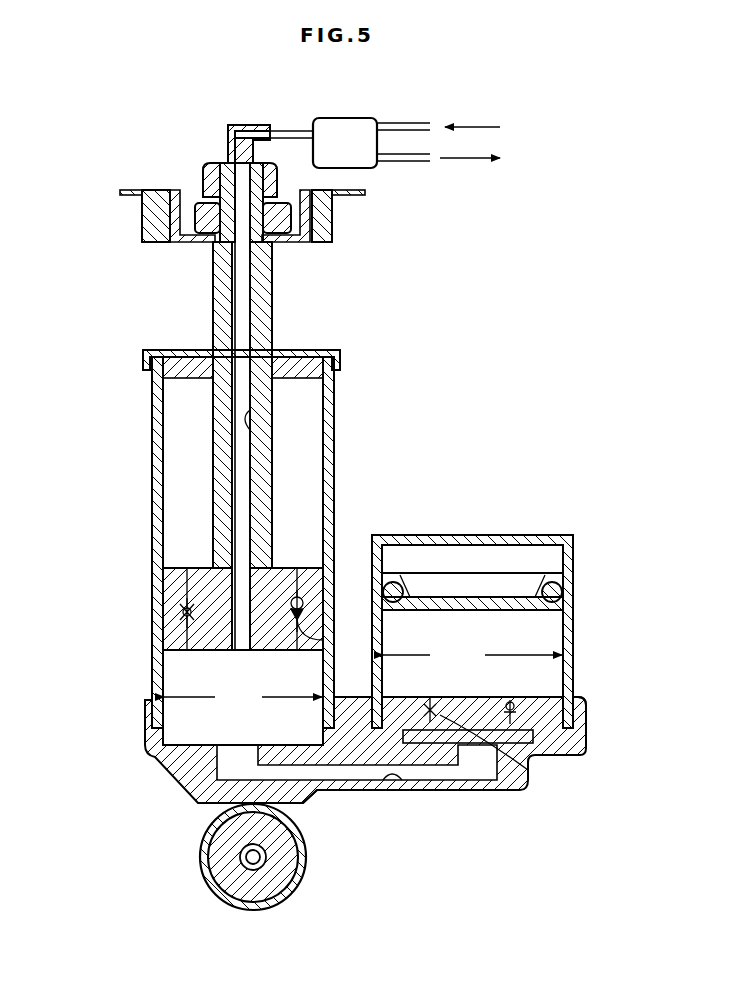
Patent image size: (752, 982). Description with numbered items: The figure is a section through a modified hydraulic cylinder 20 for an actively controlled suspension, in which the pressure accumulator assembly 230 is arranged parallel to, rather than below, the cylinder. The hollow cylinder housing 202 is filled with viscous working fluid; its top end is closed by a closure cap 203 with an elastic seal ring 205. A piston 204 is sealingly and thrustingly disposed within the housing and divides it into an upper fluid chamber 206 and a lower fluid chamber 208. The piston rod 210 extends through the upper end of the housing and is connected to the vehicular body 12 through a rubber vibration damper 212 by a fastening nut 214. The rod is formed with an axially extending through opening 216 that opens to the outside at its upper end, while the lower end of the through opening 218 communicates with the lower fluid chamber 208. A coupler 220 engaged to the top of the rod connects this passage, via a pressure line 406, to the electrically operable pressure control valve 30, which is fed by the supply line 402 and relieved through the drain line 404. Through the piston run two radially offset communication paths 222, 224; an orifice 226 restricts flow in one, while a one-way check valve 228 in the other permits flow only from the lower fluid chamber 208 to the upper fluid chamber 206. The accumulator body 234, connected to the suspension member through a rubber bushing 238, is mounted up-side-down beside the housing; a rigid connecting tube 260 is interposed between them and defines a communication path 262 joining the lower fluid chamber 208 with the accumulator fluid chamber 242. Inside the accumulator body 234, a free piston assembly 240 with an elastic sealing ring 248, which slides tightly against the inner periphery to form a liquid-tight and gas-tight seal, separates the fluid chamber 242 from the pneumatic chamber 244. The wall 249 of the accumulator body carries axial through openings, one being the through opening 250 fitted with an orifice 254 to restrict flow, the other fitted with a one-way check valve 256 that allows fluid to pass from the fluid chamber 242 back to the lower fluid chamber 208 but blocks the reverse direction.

The vehicular body 12 is at (138, 194).
The hydraulic cylinder 20 is at (348, 470).
The pressure control valve 30 is at (360, 130).
The cylinder housing 202 is at (340, 560).
The closure cap 203 is at (340, 353).
The piston 204 is at (315, 606).
The elastic seal ring 205 is at (200, 372).
The upper fluid chamber 206 is at (298, 497).
The lower fluid chamber 208 is at (297, 672).
The piston rod 210 is at (265, 317).
The vibration damper 212 is at (323, 222).
The fastening nut 214 is at (277, 247).
The through opening 216 is at (252, 425).
The through opening 218 is at (241, 652).
The coupler 220 is at (210, 167).
The communication path 222 is at (165, 580).
The communication path 224 is at (305, 585).
The orifice 226 is at (185, 612).
The one-way check valve 228 is at (340, 640).
The pressure accumulator assembly 230 is at (588, 552).
The accumulator body 234 is at (577, 658).
The rubber bushing 238 is at (305, 865).
The free piston assembly 240 is at (522, 586).
The fluid chamber 242 is at (542, 632).
The pneumatic chamber 244 is at (507, 560).
The elastic sealing ring 248 is at (562, 590).
The upper wall 249 is at (585, 700).
The through opening 250 is at (523, 767).
The orifice 254 is at (432, 712).
The one-way check valve 256 is at (562, 757).
The connecting tube 260 is at (365, 790).
The communication path 262 is at (395, 790).
The supply line 402 is at (417, 122).
The drain line 404 is at (410, 162).
The pressure line 406 is at (292, 128).